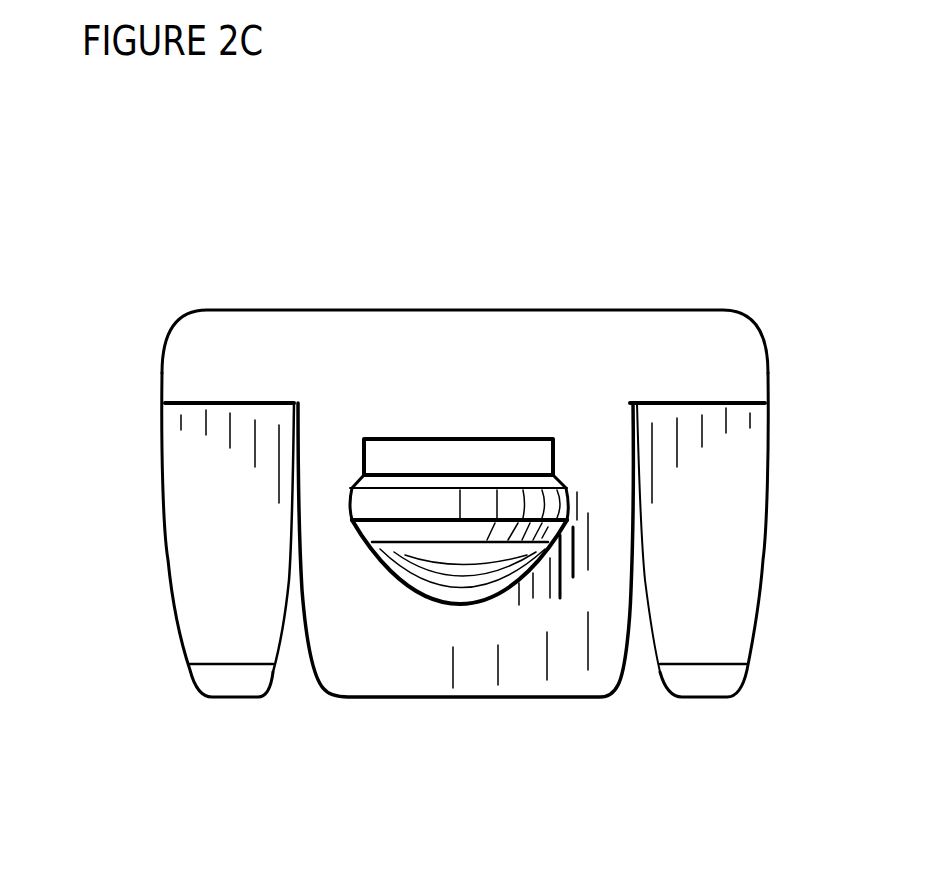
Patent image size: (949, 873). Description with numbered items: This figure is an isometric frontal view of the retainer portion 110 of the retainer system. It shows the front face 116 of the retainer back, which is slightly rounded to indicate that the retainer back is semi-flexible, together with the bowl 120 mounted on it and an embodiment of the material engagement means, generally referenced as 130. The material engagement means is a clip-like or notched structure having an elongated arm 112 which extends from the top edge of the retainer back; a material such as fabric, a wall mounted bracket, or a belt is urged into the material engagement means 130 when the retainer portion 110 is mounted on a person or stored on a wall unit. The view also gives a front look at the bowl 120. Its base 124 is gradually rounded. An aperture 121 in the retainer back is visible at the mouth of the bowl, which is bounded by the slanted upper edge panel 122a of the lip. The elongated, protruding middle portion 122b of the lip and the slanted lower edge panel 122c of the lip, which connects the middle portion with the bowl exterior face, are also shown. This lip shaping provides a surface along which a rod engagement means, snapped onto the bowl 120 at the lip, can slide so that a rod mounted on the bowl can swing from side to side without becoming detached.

The retainer portion 110 is at (676, 272).
The elongated arm 112 is at (717, 495).
The front face of the retainer back 116 is at (600, 442).
The bowl 120 is at (477, 495).
The aperture 121 is at (390, 408).
The upper edge panel of the lip 122a is at (438, 423).
The middle portion of the lip 122b is at (482, 437).
The lower edge panel of the lip 122c is at (525, 437).
The base of the bowl 124 is at (448, 582).
The material engagement means 130 is at (642, 708).